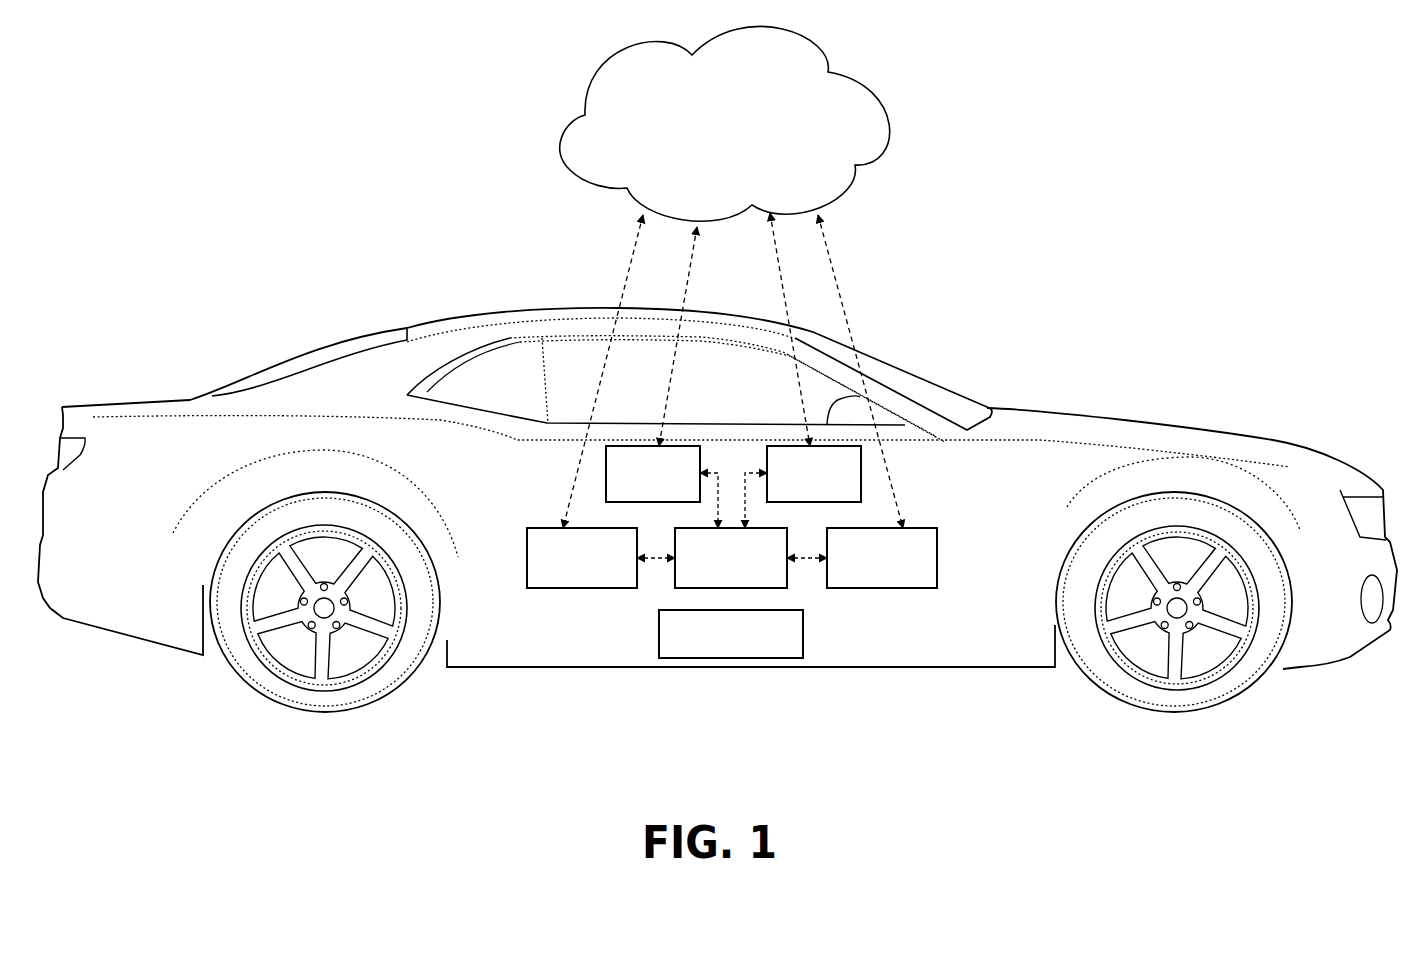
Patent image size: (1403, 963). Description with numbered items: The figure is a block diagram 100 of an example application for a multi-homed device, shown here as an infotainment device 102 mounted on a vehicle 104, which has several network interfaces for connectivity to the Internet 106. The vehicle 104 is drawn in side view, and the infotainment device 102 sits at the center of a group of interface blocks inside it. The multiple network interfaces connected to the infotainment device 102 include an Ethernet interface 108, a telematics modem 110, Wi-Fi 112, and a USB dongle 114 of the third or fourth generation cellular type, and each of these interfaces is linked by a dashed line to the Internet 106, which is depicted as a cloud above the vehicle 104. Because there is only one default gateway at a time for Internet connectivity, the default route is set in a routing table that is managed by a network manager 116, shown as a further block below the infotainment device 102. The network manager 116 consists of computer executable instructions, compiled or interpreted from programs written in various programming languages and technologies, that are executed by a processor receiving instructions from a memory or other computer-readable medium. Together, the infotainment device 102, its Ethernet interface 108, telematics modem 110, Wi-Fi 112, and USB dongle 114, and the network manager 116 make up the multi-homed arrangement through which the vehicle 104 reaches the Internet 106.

The block diagram 100 is at (1118, 260).
The infotainment device 102 is at (713, 572).
The vehicle 104 is at (1164, 420).
The Internet 106 is at (713, 138).
The Ethernet interface 108 is at (635, 486).
The telematics modem 110 is at (794, 486).
The Wi-Fi 112 is at (864, 572).
The USB dongle 114 is at (563, 572).
The network manager 116 is at (713, 644).